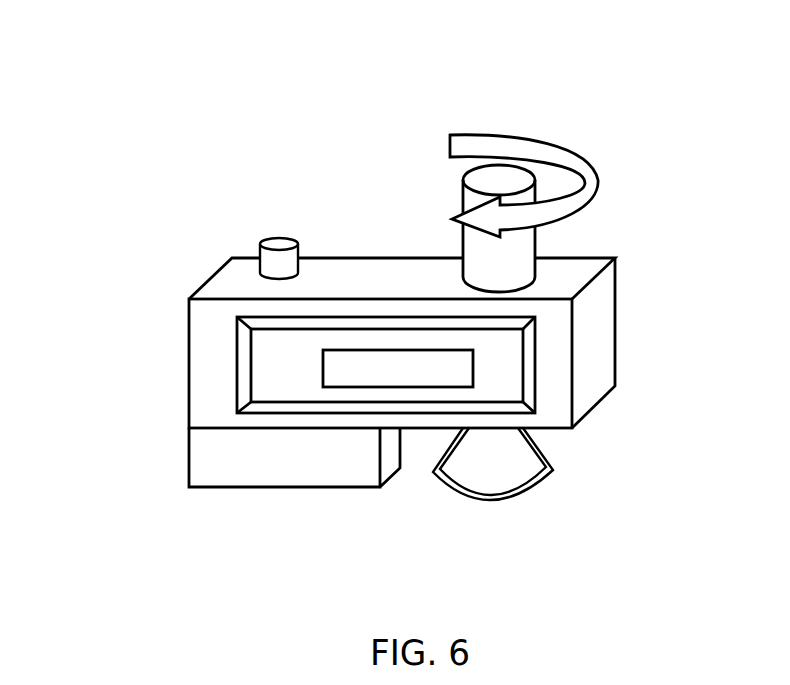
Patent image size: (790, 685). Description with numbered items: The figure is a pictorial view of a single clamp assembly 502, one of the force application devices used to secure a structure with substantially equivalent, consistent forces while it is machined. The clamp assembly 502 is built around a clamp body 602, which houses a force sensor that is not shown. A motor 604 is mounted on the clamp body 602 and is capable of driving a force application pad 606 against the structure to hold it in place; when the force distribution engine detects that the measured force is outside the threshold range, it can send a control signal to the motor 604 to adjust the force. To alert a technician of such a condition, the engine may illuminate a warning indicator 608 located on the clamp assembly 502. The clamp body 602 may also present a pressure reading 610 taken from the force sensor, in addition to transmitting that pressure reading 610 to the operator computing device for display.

The clamp assembly 502 is at (531, 38).
The clamp body 602 is at (203, 338).
The motor 604 is at (513, 252).
The force application pad 606 is at (522, 478).
The warning indicator 608 is at (273, 257).
The pressure reading 610 is at (362, 388).